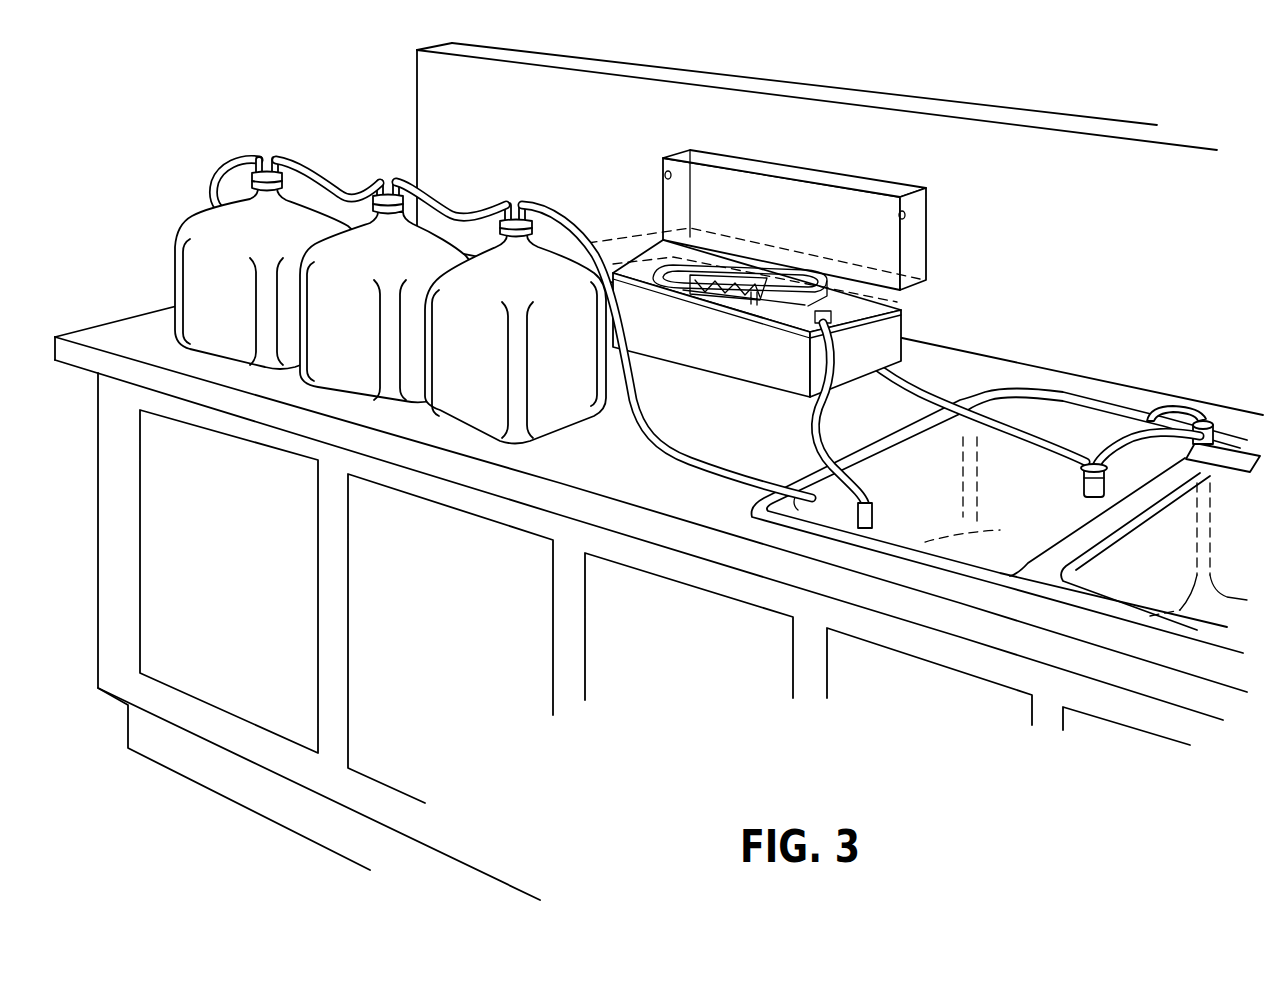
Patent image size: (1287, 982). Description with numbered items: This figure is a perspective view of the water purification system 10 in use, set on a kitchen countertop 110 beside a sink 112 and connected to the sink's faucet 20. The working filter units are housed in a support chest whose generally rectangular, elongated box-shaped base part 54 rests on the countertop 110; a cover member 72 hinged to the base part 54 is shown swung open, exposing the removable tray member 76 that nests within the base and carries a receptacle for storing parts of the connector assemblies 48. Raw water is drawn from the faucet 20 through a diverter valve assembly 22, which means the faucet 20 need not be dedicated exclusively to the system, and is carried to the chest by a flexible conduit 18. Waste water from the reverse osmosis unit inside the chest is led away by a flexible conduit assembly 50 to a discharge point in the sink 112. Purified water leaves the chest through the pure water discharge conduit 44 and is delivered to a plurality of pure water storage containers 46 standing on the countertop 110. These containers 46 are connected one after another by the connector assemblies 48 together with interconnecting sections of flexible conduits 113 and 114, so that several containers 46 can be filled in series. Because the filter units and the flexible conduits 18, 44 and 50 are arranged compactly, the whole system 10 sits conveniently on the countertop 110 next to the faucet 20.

The water purification system 10 is at (798, 265).
The flexible conduit 18 is at (1010, 457).
The faucet 20 is at (1106, 440).
The diverter valve assembly 22 is at (1080, 488).
The pure water discharge conduit 44 is at (229, 163).
The pure water storage containers 46 is at (174, 267).
The connector assemblies 48 is at (269, 157).
The flexible conduit assembly 50 is at (808, 435).
The base part 54 is at (714, 364).
The cover member 72 is at (630, 233).
The tray member 76 is at (853, 295).
The kitchen countertop 110 is at (598, 483).
The sink 112 is at (899, 528).
The flexible conduit 113 is at (312, 180).
The flexible conduit 114 is at (701, 460).